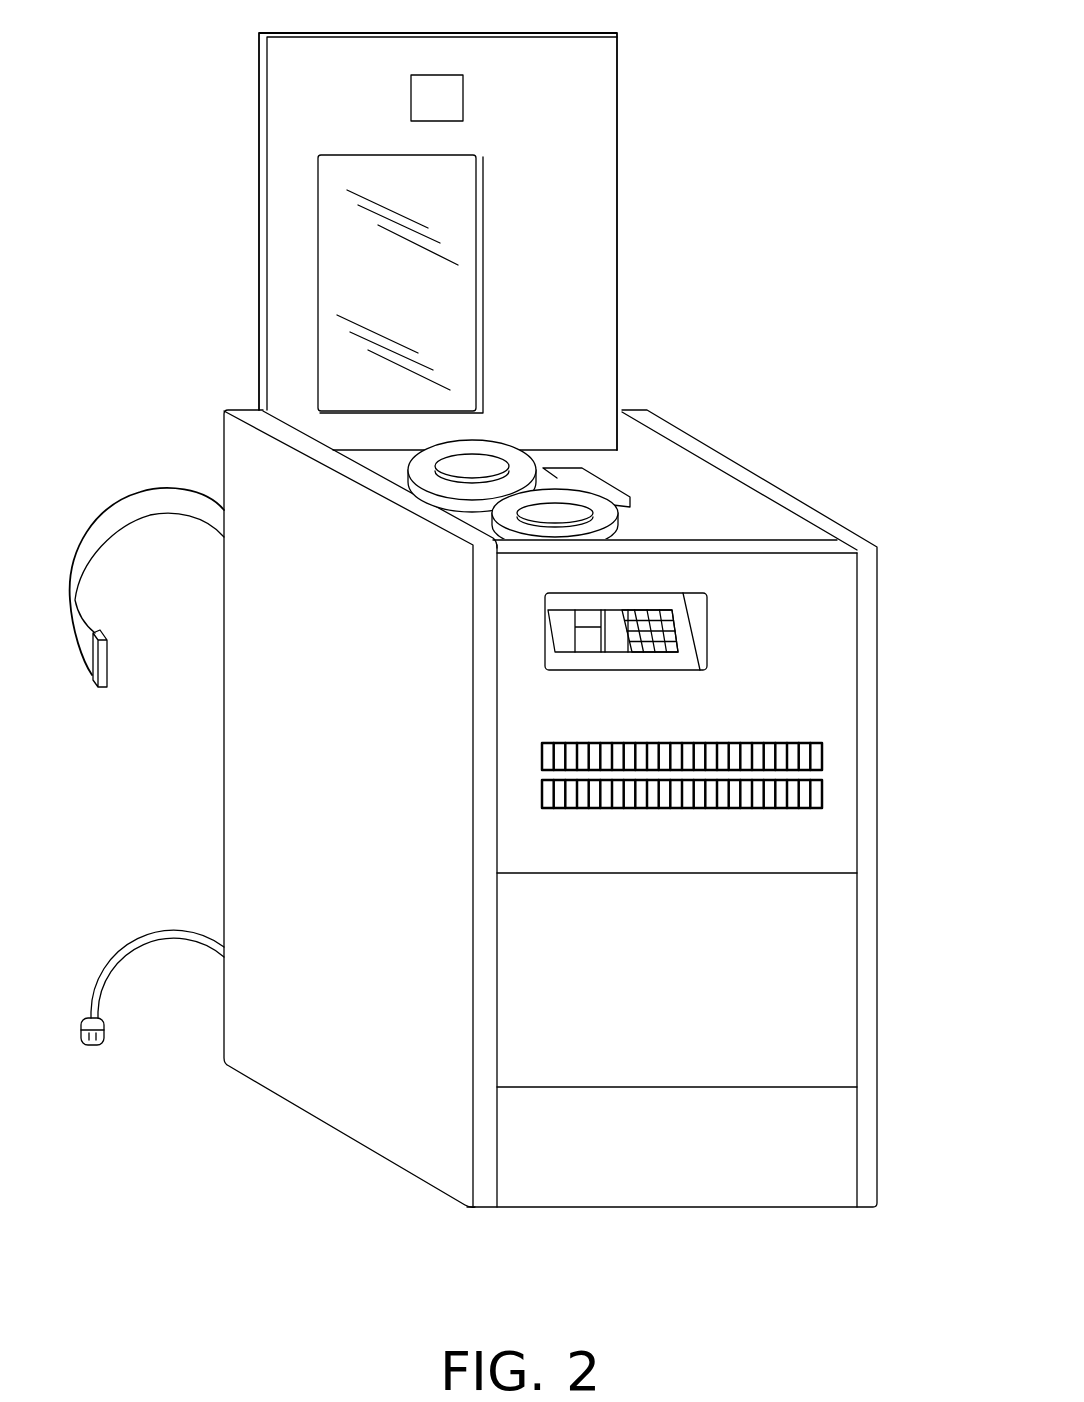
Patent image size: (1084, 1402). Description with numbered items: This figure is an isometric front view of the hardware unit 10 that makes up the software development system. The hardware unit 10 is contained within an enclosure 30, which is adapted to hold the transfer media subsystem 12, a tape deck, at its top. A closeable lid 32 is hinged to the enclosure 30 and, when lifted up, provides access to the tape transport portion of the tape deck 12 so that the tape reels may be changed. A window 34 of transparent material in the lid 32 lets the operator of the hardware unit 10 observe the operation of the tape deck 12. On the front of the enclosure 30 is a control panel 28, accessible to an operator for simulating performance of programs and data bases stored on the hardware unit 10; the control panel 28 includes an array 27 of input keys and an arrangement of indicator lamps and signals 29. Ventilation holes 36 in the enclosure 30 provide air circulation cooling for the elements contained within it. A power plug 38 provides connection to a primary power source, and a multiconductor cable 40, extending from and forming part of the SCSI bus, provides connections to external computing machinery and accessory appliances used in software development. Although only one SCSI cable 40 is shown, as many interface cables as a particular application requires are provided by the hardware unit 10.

The hardware unit 10 is at (288, 1149).
The transfer media subsystem 12 is at (690, 518).
The array of input keys 27 is at (662, 652).
The control panel 28 is at (623, 662).
The indicator lamps and signals 29 is at (592, 645).
The enclosure 30 is at (873, 1120).
The closeable lid 32 is at (602, 242).
The window 34 is at (332, 257).
The ventilation holes 36 is at (813, 808).
The power plug 38 is at (105, 968).
The multiconductor cable 40 is at (122, 510).